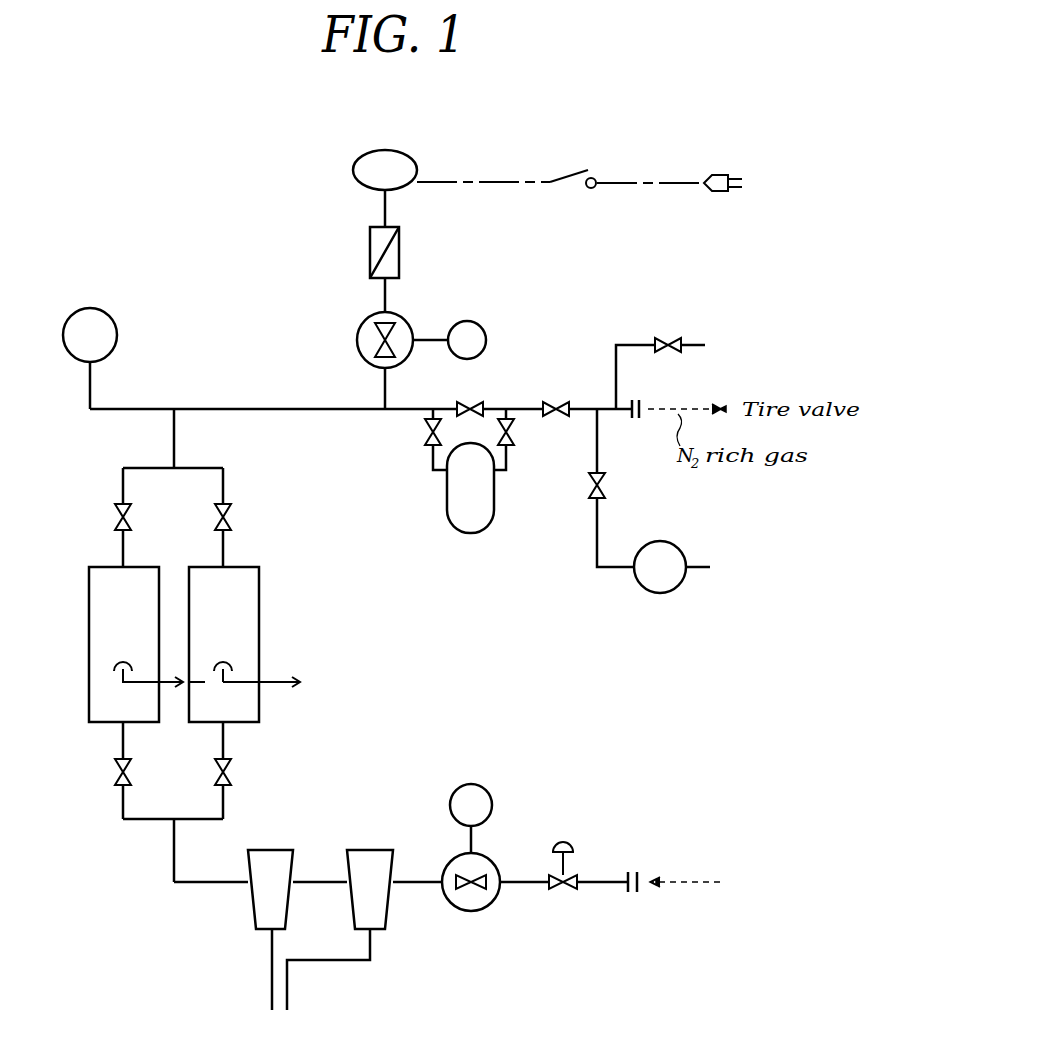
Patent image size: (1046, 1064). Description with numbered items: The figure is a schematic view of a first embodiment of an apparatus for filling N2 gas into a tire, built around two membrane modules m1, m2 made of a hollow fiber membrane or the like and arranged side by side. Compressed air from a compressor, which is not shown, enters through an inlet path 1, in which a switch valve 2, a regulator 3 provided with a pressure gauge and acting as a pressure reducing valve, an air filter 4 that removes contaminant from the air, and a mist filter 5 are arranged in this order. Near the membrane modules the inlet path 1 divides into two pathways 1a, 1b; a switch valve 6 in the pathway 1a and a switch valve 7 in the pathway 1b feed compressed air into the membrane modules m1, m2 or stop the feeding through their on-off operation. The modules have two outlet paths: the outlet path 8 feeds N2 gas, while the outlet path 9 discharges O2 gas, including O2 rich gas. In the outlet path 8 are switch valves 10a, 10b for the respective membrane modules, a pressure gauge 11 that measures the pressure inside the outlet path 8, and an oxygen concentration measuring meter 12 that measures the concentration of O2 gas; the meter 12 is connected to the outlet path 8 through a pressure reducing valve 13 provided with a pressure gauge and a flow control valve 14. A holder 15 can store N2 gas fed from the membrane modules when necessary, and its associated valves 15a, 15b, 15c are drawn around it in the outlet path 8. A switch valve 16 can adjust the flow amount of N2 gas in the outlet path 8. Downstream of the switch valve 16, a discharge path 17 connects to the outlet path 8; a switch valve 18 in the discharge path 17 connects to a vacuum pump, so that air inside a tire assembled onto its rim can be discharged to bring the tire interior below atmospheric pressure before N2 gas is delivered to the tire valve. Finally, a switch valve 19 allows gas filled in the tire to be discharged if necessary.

The inlet path 1 is at (188, 892).
The pathway 1a is at (226, 806).
The pathway 1b is at (122, 809).
The switch valve 2 is at (563, 890).
The regulator 3 is at (471, 912).
The air filter 4 is at (388, 915).
The mist filter 5 is at (250, 915).
The switch valve 6 is at (235, 771).
The switch valve 7 is at (135, 771).
The outlet path 8 is at (190, 453).
The outlet path 9 is at (280, 681).
The switch valve 10a is at (235, 520).
The switch valve 10b is at (117, 522).
The pressure gauge 11 is at (96, 308).
The oxygen concentration measuring meter 12 is at (382, 150).
The pressure reducing valve 13 is at (357, 340).
The flow control valve 14 is at (370, 254).
The holder 15 is at (447, 492).
The bypass valve 15a is at (465, 397).
The tank inlet valve 15b is at (425, 437).
The tank outlet valve 15c is at (512, 437).
The switch valve 16 is at (560, 398).
The discharge path 17 is at (592, 531).
The switch valve 18 is at (605, 489).
The switch valve 19 is at (672, 340).
The membrane module m1 is at (262, 617).
The membrane module m2 is at (89, 600).